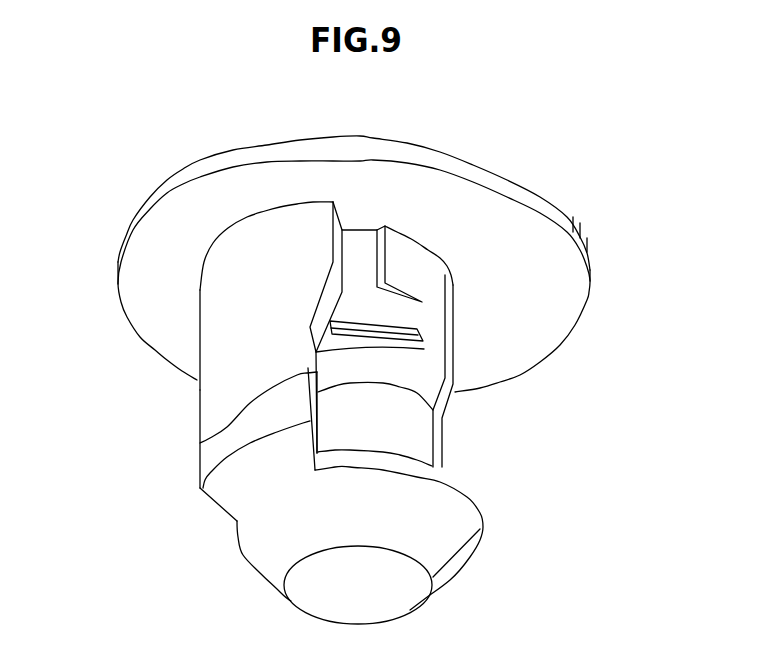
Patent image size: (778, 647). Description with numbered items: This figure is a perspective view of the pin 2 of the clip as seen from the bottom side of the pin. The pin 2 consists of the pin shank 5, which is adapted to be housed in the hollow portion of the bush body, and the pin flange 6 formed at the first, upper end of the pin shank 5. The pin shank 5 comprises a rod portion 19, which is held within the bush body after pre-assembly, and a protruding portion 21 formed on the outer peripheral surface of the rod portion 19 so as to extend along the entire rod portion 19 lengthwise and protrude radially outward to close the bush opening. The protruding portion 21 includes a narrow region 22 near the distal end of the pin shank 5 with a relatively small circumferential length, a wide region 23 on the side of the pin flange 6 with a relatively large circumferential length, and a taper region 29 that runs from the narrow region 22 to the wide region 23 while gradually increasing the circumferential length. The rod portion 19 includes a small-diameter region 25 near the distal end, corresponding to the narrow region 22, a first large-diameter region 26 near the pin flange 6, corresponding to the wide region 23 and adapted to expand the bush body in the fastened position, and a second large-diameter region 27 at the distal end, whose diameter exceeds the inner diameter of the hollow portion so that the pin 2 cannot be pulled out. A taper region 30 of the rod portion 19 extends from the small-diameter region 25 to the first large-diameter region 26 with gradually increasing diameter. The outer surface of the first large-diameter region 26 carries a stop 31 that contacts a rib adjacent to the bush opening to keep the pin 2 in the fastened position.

The pin 2 is at (590, 183).
The pin shank 5 is at (455, 318).
The pin flange 6 is at (118, 279).
The rod portion 19 is at (648, 398).
The protruding portion 21 is at (66, 328).
The narrow region 22 is at (222, 396).
The wide region 23 is at (238, 286).
The small-diameter region 25 is at (445, 448).
The first large-diameter region 26 is at (455, 345).
The second large-diameter region 27 is at (480, 499).
The taper region 29 is at (326, 302).
The taper region 30 is at (200, 443).
The stop 31 is at (393, 248).